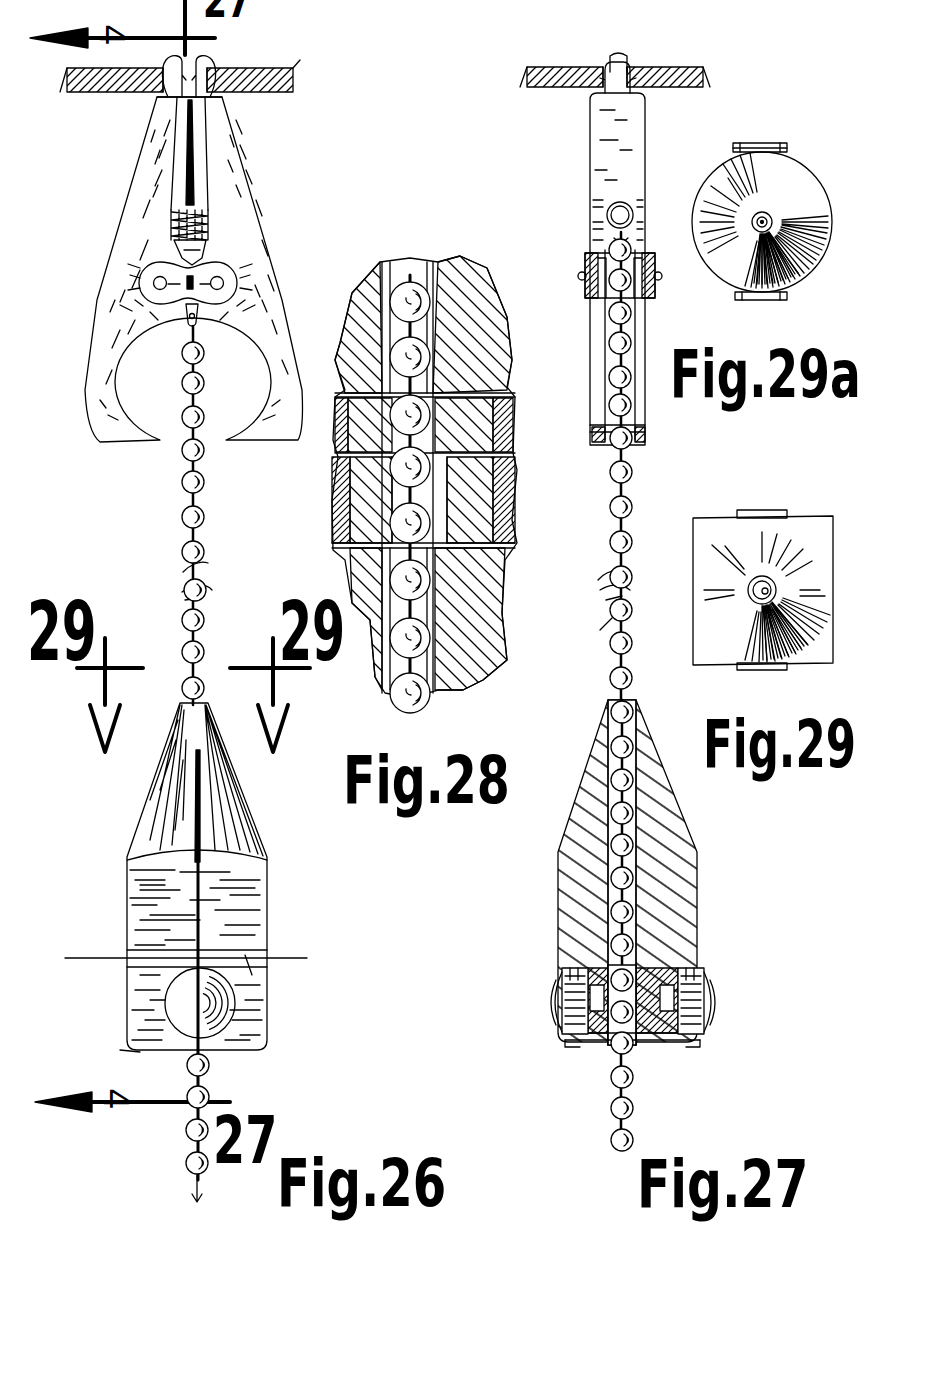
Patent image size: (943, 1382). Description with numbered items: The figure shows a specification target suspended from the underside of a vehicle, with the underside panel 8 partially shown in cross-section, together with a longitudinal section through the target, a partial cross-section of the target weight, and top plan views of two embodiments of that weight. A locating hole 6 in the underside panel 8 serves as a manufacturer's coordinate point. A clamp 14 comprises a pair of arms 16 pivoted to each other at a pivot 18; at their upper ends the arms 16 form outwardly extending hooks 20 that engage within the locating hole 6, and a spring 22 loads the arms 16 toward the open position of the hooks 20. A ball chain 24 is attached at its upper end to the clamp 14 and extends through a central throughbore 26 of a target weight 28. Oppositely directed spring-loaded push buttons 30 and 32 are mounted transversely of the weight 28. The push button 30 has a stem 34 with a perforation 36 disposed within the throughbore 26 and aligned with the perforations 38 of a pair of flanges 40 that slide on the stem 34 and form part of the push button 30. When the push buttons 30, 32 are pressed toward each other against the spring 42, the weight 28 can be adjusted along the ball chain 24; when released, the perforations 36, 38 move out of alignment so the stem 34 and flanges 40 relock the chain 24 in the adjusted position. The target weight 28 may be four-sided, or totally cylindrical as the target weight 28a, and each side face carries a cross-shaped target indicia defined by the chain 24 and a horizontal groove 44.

In FIG. 26, the hole 6 is at (170, 98).
In FIG. 27, the hole 6 is at (608, 62).
In FIG. 26, the underside panel 8 is at (262, 92).
In FIG. 27, the underside panel 8 is at (680, 72).
In FIG. 26, the clamp 14 is at (268, 244).
In FIG. 27, the clamp 14 is at (590, 128).
In FIG. 26, the arms 16 is at (148, 190).
In FIG. 27, the arms 16 is at (590, 152).
In FIG. 26, the pivot 18 is at (145, 275).
In FIG. 27, the pivot 18 is at (582, 262).
In FIG. 26, the hooks 20 is at (165, 62).
In FIG. 27, the hooks 20 is at (630, 60).
In FIG. 26, the spring 22 is at (200, 210).
In FIG. 26, the ball chain 24 is at (182, 480).
In FIG. 28, the ball chain 24 is at (457, 499).
In FIG. 27, the ball chain 24 is at (605, 560).
In FIG. 28, the central throughbore 26 is at (435, 343).
In FIG. 27, the central throughbore 26 is at (637, 830).
In FIG. 26, the target weight 28 is at (248, 896).
In FIG. 28, the target weight 28 is at (478, 343).
In FIG. 27, the target weight 28 is at (657, 872).
In FIG. 29A, the target weight 28a is at (808, 165).
In FIG. 26, the push button 30 is at (240, 1015).
In FIG. 27, the push button 30 is at (552, 1002).
In FIG. 29A, the push button 30 is at (754, 143).
In FIG. 29, the push button 30 is at (762, 510).
In FIG. 27, the push button 32 is at (705, 972).
In FIG. 29A, the push button 32 is at (765, 300).
In FIG. 28, the stem 34 is at (507, 480).
In FIG. 27, the stem 34 is at (710, 1000).
In FIG. 28, the perforation 36 is at (447, 513).
In FIG. 27, the perforation 36 is at (643, 962).
In FIG. 28, the perforations 38 is at (512, 545).
In FIG. 28, the flanges 40 is at (493, 397).
In FIG. 27, the spring 42 is at (565, 1045).
In FIG. 26, the horizontal groove 44 is at (255, 968).